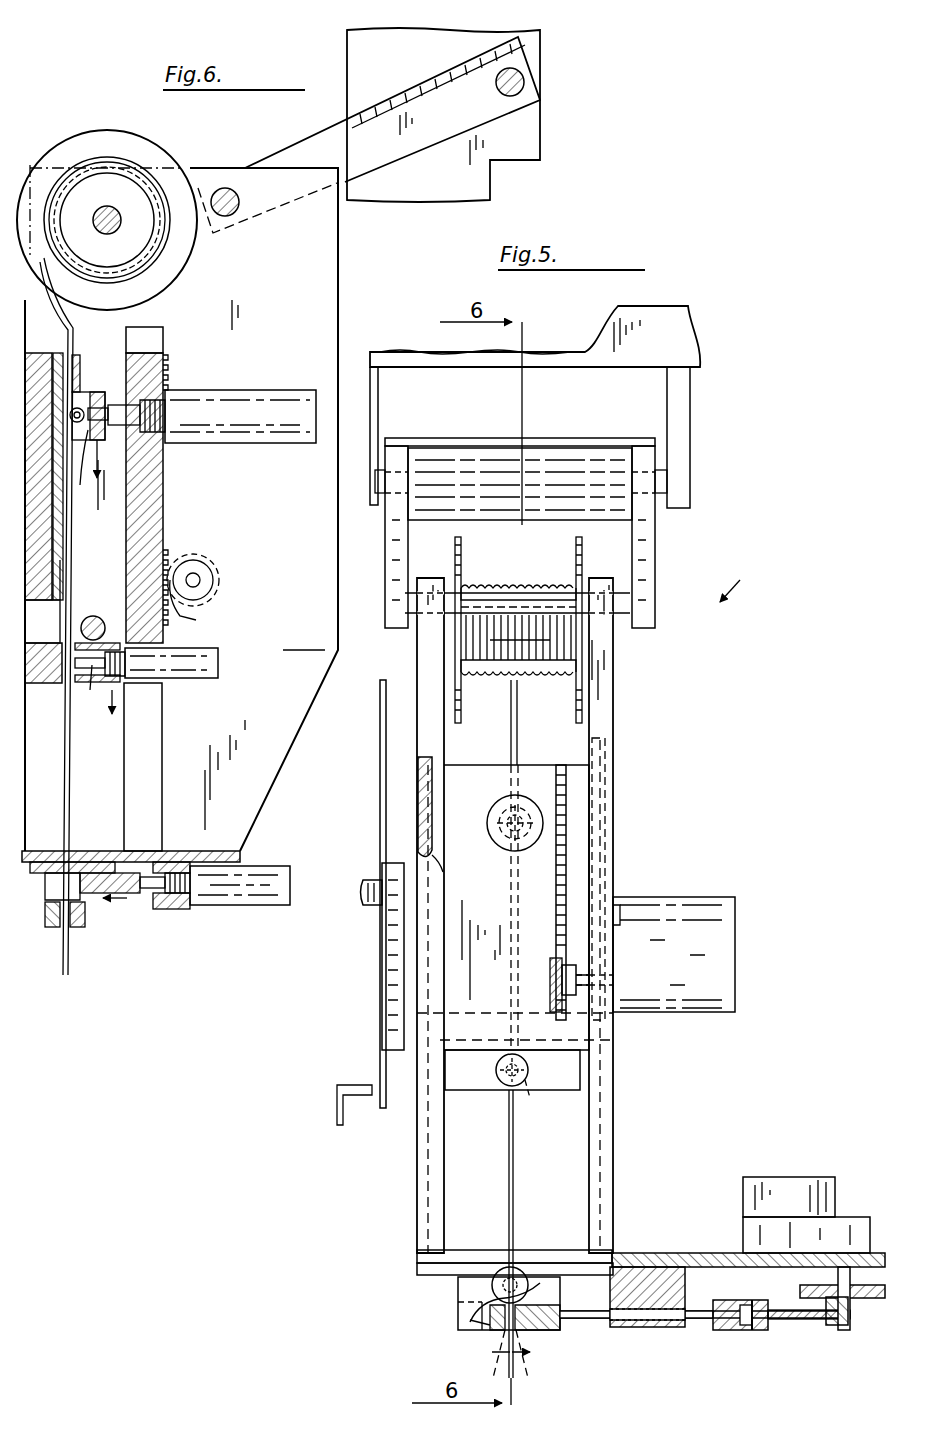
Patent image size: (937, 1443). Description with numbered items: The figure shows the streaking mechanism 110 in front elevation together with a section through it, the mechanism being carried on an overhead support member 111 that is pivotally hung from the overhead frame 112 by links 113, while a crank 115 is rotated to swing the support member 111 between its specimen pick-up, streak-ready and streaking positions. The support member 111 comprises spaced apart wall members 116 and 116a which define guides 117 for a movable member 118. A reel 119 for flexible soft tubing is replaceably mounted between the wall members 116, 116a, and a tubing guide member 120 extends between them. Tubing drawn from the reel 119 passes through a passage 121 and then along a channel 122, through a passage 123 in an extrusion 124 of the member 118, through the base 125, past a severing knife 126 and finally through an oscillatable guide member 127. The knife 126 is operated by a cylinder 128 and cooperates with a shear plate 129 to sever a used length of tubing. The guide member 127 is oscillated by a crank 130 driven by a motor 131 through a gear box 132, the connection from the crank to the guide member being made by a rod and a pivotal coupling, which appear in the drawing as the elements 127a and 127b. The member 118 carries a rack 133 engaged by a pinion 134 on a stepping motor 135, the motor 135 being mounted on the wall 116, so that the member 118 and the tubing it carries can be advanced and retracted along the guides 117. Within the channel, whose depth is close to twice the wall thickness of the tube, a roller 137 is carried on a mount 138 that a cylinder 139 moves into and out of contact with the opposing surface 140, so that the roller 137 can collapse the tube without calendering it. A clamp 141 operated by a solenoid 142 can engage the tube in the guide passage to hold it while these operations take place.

In FIG. 5, the streaking mechanism 110 is at (738, 578).
In FIG. 6, the overhead support member 111 is at (326, 302).
In FIG. 5, the overhead support member 111 is at (620, 856).
In FIG. 6, the overhead frame 112 is at (388, 62).
In FIG. 5, the overhead frame 112 is at (682, 408).
In FIG. 6, the links 113 is at (330, 142).
In FIG. 5, the links 113 is at (400, 565).
In FIG. 5, the crank 115 is at (395, 1000).
In FIG. 5, the wall member 116 is at (428, 700).
In FIG. 6, the wall member 116a is at (309, 638).
In FIG. 5, the wall member 116a is at (602, 668).
In FIG. 6, the guides 117 is at (128, 728).
In FIG. 5, the guides 117 is at (436, 762).
In FIG. 6, the member 118 is at (148, 510).
In FIG. 5, the member 118 is at (500, 893).
In FIG. 6, the reel 119 is at (118, 156).
In FIG. 5, the reel 119 is at (582, 578).
In FIG. 6, the tubing guide member 120 is at (48, 526).
In FIG. 5, the tubing guide member 120 is at (511, 1029).
In FIG. 6, the passage 121 is at (52, 355).
In FIG. 6, the channel 122 is at (65, 568).
In FIG. 6, the passage 123 is at (38, 685).
In FIG. 6, the extrusion 124 is at (38, 660).
In FIG. 6, the base 125 is at (168, 852).
In FIG. 5, the base 125 is at (463, 1255).
In FIG. 6, the severing knife 126 is at (103, 875).
In FIG. 6, the oscillatable guide member 127 is at (85, 930).
In FIG. 5, the oscillatable guide member 127 is at (490, 1323).
In FIG. 5, the clamp actuating rod 127a is at (600, 1330).
In FIG. 5, the rod coupling 127b is at (733, 1330).
In FIG. 6, the cylinder 128 is at (245, 900).
In FIG. 5, the cylinder 128 is at (516, 1275).
In FIG. 6, the shear plate 129 is at (38, 862).
In FIG. 5, the shear plate 129 is at (468, 1268).
In FIG. 5, the crank 130 is at (868, 1298).
In FIG. 5, the motor 131 is at (808, 1190).
In FIG. 5, the gear box 132 is at (762, 1232).
In FIG. 6, the rack 133 is at (178, 610).
In FIG. 5, the rack 133 is at (556, 866).
In FIG. 6, the pinion 134 is at (195, 568).
In FIG. 5, the pinion 134 is at (550, 988).
In FIG. 5, the stepping motor 135 is at (708, 960).
In FIG. 6, the roller 137 is at (78, 410).
In FIG. 6, the mount 138 is at (96, 476).
In FIG. 6, the cylinder 139 is at (238, 405).
In FIG. 5, the cylinder 139 is at (502, 805).
In FIG. 6, the gripper pad 140 is at (68, 585).
In FIG. 6, the clamp 141 is at (94, 698).
In FIG. 5, the clamp 141 is at (543, 1104).
In FIG. 6, the solenoid 142 is at (212, 662).
In FIG. 5, the solenoid 142 is at (500, 1078).